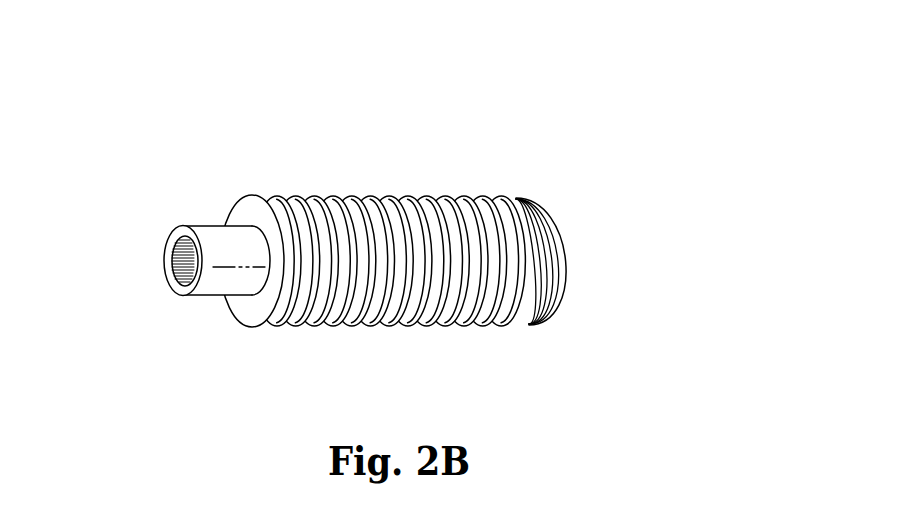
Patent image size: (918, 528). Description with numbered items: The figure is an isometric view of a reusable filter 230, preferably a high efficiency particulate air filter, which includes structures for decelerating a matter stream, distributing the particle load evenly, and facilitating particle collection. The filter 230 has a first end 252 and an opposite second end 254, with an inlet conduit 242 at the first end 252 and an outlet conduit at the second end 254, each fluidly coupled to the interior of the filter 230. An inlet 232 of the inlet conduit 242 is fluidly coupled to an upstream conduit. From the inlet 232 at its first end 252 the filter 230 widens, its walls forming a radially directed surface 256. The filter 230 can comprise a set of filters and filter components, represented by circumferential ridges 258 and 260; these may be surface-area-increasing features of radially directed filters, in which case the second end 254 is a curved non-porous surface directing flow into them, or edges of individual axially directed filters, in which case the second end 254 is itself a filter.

The filter 230 is at (160, 110).
The inlet 232 is at (167, 263).
The inlet conduit 242 is at (213, 243).
The first end 252 is at (257, 315).
The second end 254 is at (565, 265).
The radially directed surface 256 is at (535, 178).
The circumferential ridge 258 is at (430, 325).
The circumferential ridge 260 is at (405, 325).